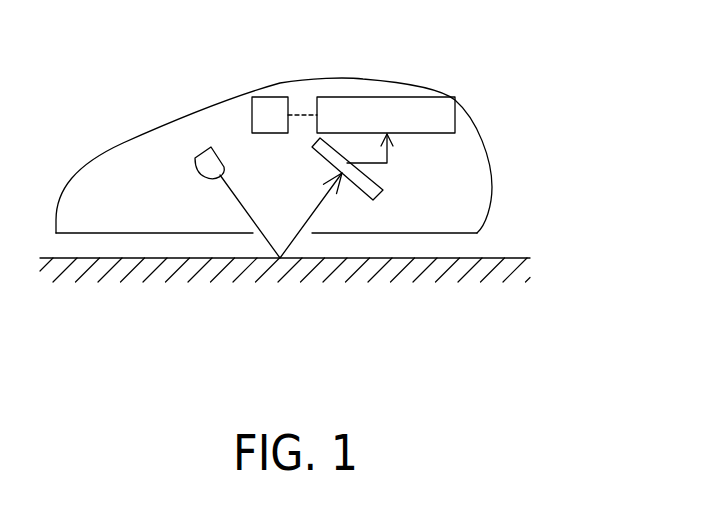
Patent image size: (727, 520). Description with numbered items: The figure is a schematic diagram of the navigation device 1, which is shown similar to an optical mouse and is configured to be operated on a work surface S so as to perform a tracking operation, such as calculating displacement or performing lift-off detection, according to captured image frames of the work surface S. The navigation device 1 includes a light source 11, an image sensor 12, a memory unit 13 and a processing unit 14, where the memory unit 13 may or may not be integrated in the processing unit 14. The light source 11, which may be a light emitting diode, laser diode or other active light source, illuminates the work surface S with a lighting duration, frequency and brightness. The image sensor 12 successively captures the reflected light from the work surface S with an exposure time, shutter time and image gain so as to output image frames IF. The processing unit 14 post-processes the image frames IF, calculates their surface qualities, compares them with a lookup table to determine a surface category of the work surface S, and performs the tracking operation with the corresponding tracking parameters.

The navigation device 1 is at (462, 98).
The light source 11 is at (197, 156).
The image sensor 12 is at (372, 200).
The memory unit 13 is at (273, 97).
The processing unit 14 is at (383, 97).
The image frames IF is at (384, 151).
The work surface S is at (494, 257).